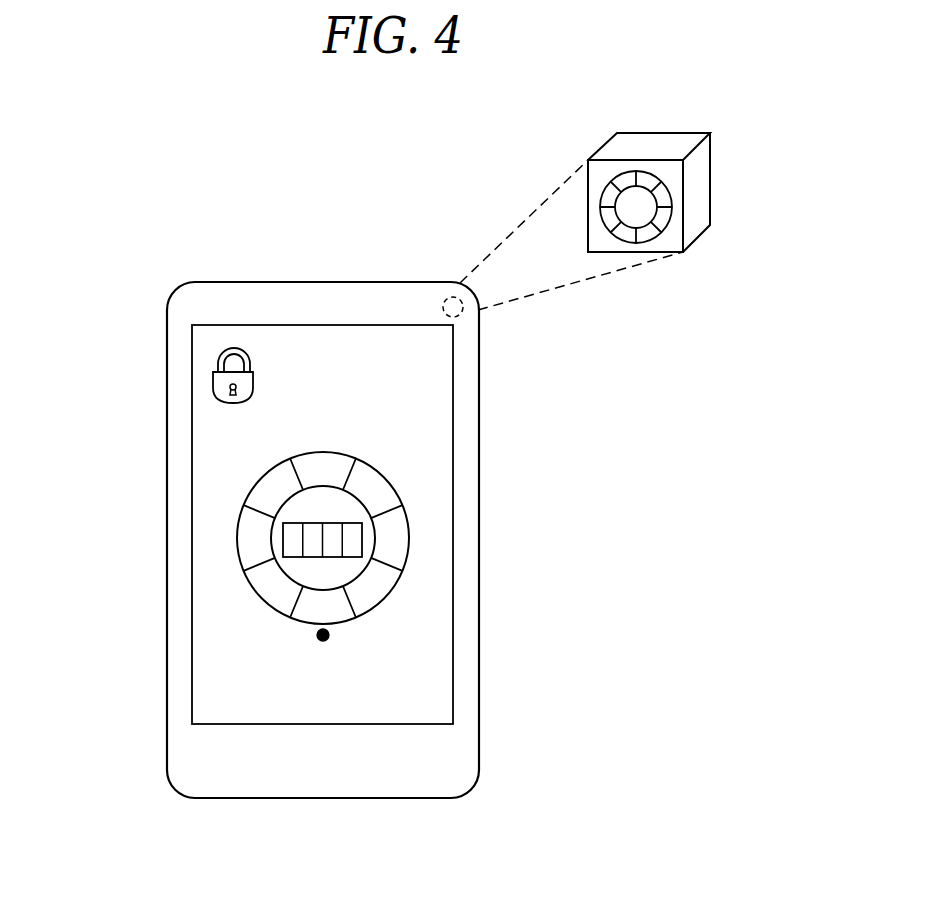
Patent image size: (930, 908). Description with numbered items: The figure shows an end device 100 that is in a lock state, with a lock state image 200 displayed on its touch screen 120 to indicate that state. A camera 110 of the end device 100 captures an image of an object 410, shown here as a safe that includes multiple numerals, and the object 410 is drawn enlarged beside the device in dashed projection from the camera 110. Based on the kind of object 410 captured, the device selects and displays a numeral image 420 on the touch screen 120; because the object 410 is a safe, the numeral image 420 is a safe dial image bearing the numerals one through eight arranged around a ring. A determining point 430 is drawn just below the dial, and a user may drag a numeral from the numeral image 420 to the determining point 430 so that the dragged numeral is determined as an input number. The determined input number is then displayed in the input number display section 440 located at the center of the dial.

The end device 100 is at (242, 281).
The camera 110 is at (458, 315).
The touch screen 120 is at (440, 449).
The lock state image 200 is at (220, 378).
The object 410 is at (615, 145).
The numeral image 420 is at (238, 515).
The determining point 430 is at (325, 641).
The input number display section 440 is at (290, 537).